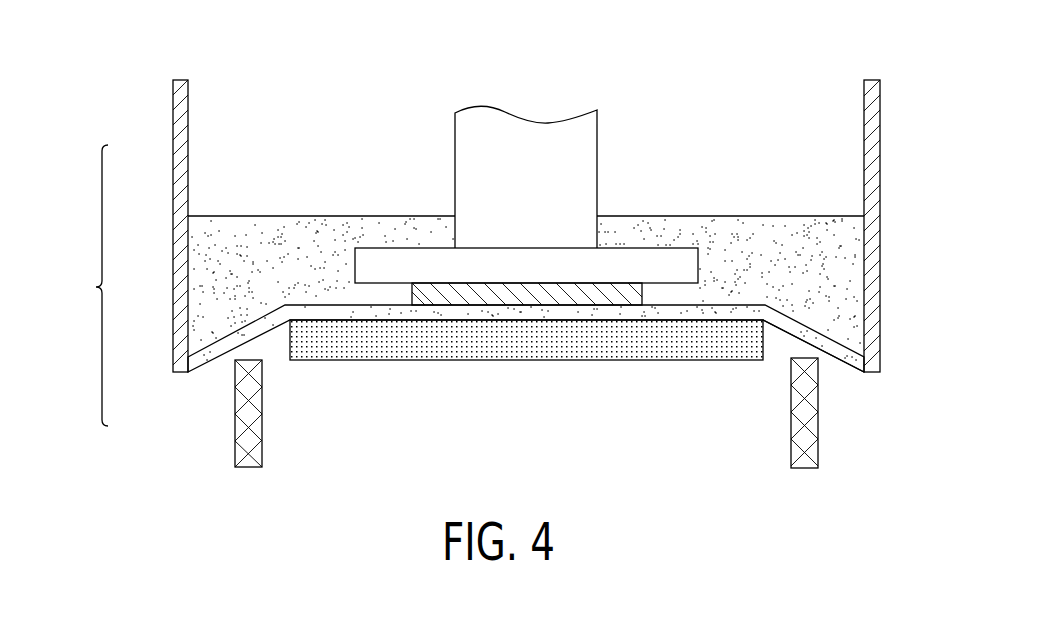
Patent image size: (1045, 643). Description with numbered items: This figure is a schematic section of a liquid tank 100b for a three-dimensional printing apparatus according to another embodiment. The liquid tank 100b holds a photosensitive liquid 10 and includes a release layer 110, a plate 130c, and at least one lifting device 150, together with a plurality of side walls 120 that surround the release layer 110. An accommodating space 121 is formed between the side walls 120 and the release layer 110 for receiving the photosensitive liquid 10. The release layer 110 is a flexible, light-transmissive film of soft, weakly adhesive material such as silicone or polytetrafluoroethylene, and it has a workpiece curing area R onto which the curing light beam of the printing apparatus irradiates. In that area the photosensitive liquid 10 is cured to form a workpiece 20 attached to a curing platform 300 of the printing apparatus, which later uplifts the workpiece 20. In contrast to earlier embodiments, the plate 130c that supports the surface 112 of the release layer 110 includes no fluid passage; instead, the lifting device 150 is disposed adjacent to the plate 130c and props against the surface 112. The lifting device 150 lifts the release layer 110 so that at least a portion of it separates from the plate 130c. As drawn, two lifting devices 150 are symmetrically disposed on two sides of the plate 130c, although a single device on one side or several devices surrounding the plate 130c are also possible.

The liquid tank 100b is at (70, 285).
The side wall 120 is at (182, 156).
The accommodating space 121 is at (787, 167).
The photosensitive liquid 10 is at (245, 232).
The release layer 110 is at (230, 343).
The surface of the release layer 112 is at (788, 333).
The plate 130c is at (305, 337).
The lifting device 150 is at (237, 413).
The curing platform 300 is at (660, 272).
The workpiece 20 is at (428, 293).
The workpiece curing area R is at (560, 317).